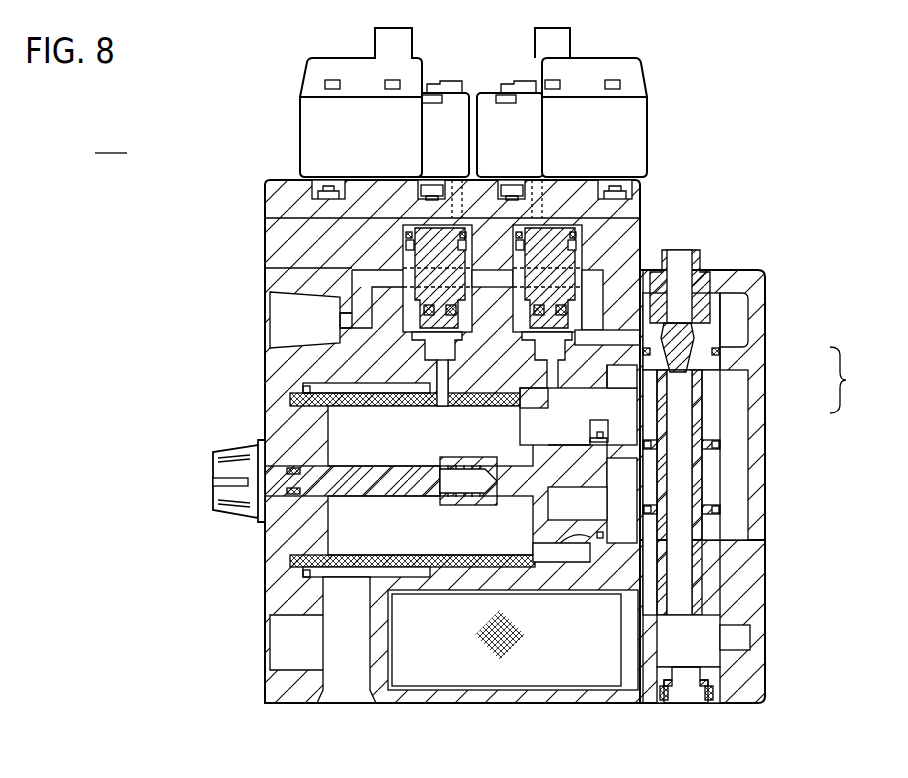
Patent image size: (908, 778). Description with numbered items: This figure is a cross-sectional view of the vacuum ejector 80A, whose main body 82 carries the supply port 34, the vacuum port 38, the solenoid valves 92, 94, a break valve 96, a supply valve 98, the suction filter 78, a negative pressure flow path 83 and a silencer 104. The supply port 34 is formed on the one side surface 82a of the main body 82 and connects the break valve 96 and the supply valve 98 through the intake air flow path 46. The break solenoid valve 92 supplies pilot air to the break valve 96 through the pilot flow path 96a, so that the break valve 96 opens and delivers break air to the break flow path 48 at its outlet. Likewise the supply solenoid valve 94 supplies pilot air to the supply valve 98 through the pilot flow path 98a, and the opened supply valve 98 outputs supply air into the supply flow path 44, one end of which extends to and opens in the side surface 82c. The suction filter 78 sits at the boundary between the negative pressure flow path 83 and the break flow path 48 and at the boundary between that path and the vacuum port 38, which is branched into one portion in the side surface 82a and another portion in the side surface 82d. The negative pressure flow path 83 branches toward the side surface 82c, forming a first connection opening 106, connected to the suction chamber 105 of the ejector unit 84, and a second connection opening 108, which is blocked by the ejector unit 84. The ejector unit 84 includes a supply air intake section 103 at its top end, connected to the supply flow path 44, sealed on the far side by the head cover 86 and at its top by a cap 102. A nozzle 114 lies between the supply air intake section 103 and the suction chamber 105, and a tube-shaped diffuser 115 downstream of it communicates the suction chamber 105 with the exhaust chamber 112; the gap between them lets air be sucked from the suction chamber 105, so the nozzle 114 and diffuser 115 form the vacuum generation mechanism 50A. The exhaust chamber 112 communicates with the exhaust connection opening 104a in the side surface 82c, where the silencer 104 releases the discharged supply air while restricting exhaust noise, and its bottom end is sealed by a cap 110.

The vacuum ejector 80A is at (111, 142).
The main body 82 is at (266, 181).
The ejector unit 84 is at (713, 266).
The head cover 86 is at (750, 607).
The break solenoid valve 92 is at (353, 58).
The supply solenoid valve 94 is at (593, 56).
The break valve 96 is at (404, 233).
The pilot flow path 96a is at (433, 190).
The supply valve 98 is at (578, 226).
The pilot flow path 98a is at (513, 190).
The supply flow path 44 is at (605, 327).
The intake air flow path 46 is at (375, 305).
The break flow path 48 is at (441, 380).
The supply port 34 is at (280, 321).
The vacuum port 38 is at (280, 642).
The suction filter 78 is at (379, 407).
The side surface 82a is at (265, 363).
The side surface 82c is at (648, 380).
The side surface 82d is at (430, 706).
The negative pressure flow path 83 is at (345, 425).
The cap 102 is at (677, 250).
The supply air intake section 103 is at (682, 283).
The silencer 104 is at (548, 660).
The exhaust connection opening 104a is at (633, 623).
The suction chamber 105 is at (648, 428).
The first connection opening 106 is at (623, 405).
The second connection opening 108 is at (620, 505).
The cap 110 is at (668, 706).
The exhaust chamber 112 is at (705, 643).
The nozzle 114 is at (692, 353).
The diffuser 115 is at (698, 413).
The vacuum generation mechanism 50A is at (856, 380).